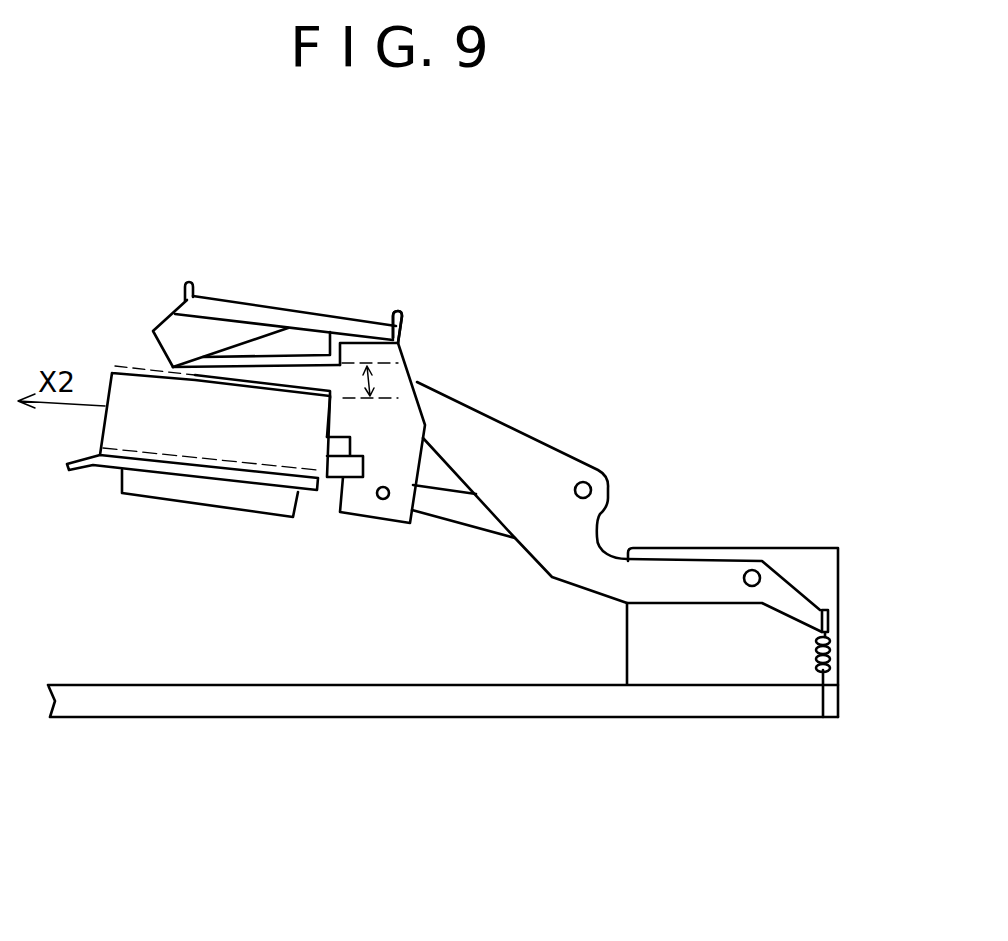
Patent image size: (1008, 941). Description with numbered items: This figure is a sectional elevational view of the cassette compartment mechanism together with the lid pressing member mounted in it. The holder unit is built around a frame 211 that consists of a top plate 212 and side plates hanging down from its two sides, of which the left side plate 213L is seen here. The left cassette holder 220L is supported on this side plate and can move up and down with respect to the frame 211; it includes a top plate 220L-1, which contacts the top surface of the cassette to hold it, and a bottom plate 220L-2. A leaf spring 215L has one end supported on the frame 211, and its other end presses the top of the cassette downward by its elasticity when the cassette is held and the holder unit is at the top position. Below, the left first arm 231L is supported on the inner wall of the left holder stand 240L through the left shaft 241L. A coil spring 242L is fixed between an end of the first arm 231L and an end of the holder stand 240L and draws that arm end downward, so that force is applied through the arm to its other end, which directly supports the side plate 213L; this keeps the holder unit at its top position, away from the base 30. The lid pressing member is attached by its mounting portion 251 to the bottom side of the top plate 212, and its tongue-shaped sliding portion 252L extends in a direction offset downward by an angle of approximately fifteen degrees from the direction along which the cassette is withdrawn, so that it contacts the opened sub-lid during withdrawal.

The base 30 is at (123, 688).
The frame 211 is at (166, 280).
The top plate 212 is at (222, 312).
The left side plate 213L is at (412, 430).
The left leaf spring 215L is at (155, 345).
The left cassette holder 220L is at (97, 434).
The top plate 220L-1 is at (293, 397).
The bottom plate 220L-2 is at (233, 477).
The left first arm 231L is at (520, 460).
The left holder stand 240L is at (703, 653).
The left shaft 241L is at (750, 570).
The coil spring 242L is at (833, 655).
The mounting portion 251 is at (364, 340).
The left sliding portion 252L is at (290, 356).